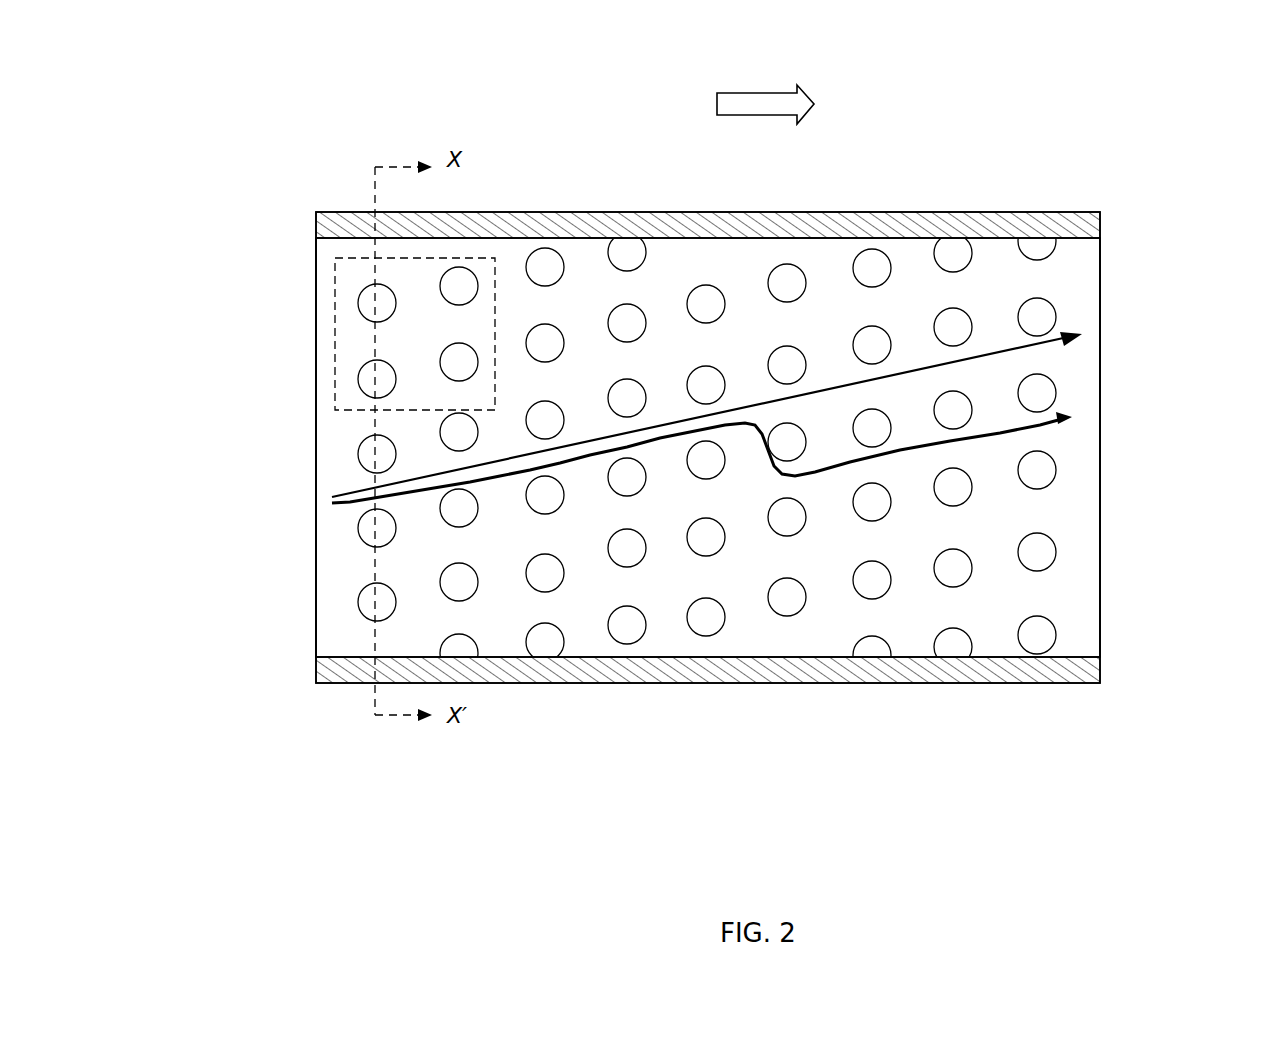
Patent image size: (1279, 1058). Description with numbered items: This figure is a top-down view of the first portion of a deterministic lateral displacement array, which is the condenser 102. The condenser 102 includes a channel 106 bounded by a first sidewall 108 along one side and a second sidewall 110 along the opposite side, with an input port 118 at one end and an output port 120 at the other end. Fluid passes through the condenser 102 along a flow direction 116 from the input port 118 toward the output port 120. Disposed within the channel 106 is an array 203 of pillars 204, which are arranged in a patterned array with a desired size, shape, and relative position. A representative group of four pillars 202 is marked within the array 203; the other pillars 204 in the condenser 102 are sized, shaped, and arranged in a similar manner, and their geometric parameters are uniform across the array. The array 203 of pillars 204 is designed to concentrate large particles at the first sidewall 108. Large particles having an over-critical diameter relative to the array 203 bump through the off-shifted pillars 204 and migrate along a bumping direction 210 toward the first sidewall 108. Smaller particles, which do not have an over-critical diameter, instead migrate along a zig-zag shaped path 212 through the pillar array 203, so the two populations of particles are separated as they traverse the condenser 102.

The condenser 102 is at (1036, 184).
The channel 106 is at (330, 602).
The first sidewall 108 is at (315, 225).
The second sidewall 110 is at (316, 668).
The flow direction 116 is at (808, 96).
The input port 118 is at (316, 446).
The output port 120 is at (1100, 447).
The four pillars 202 is at (335, 331).
The array 203 is at (772, 638).
The pillars 204 is at (707, 448).
The bumping direction 210 is at (1056, 340).
The zig-zag shaped path 212 is at (1046, 423).